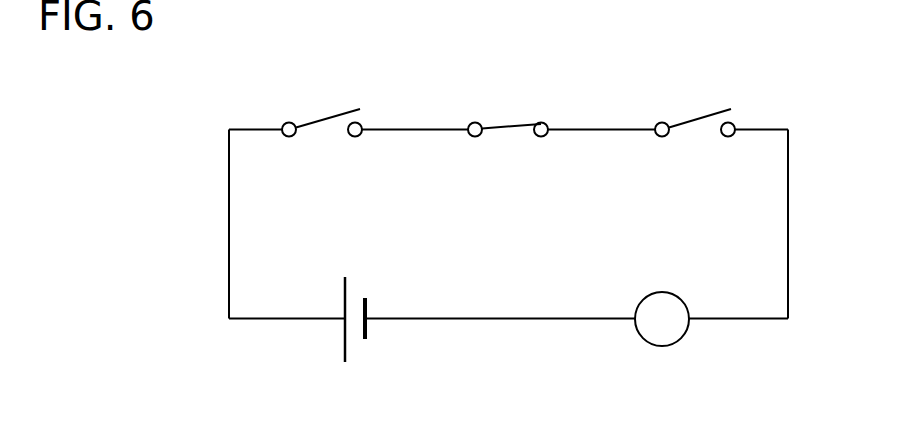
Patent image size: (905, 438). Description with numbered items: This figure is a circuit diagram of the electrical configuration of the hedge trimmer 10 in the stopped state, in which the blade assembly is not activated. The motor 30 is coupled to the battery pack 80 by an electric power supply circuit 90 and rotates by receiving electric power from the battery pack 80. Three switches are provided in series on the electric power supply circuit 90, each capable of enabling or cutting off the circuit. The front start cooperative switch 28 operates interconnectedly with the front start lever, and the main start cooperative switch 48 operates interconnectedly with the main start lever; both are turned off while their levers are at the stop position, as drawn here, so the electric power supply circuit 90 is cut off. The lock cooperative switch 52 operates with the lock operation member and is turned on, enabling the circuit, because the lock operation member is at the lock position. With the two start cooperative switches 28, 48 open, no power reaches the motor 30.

The hedge trimmer 10 is at (790, 47).
The front start cooperative switch 28 is at (327, 117).
The lock cooperative switch 52 is at (515, 125).
The main start cooperative switch 48 is at (700, 120).
The electric power supply circuit 90 is at (229, 204).
The battery pack 80 is at (342, 328).
The motor 30 is at (687, 330).